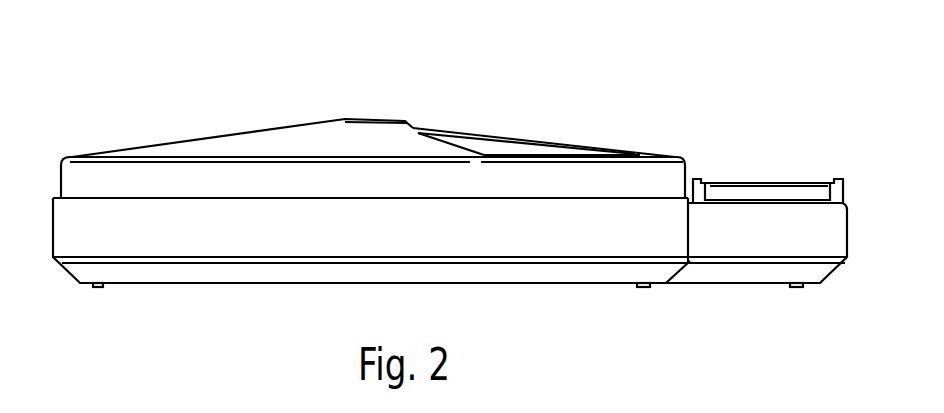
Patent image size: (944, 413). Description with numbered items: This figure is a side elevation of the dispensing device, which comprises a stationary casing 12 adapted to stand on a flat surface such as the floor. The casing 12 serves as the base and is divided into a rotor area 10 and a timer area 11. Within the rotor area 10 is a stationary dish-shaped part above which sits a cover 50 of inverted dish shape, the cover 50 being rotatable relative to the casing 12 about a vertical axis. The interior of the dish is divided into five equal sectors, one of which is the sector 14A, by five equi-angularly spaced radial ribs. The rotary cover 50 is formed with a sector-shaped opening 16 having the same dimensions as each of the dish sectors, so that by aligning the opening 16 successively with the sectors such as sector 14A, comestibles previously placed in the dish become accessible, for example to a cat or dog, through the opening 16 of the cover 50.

The rotor area 10 is at (207, 112).
The timer area 11 is at (763, 170).
The stationary casing 12 is at (195, 275).
The sector 14A is at (538, 152).
The sector-shaped opening 16 is at (500, 137).
The cover 50 is at (295, 137).